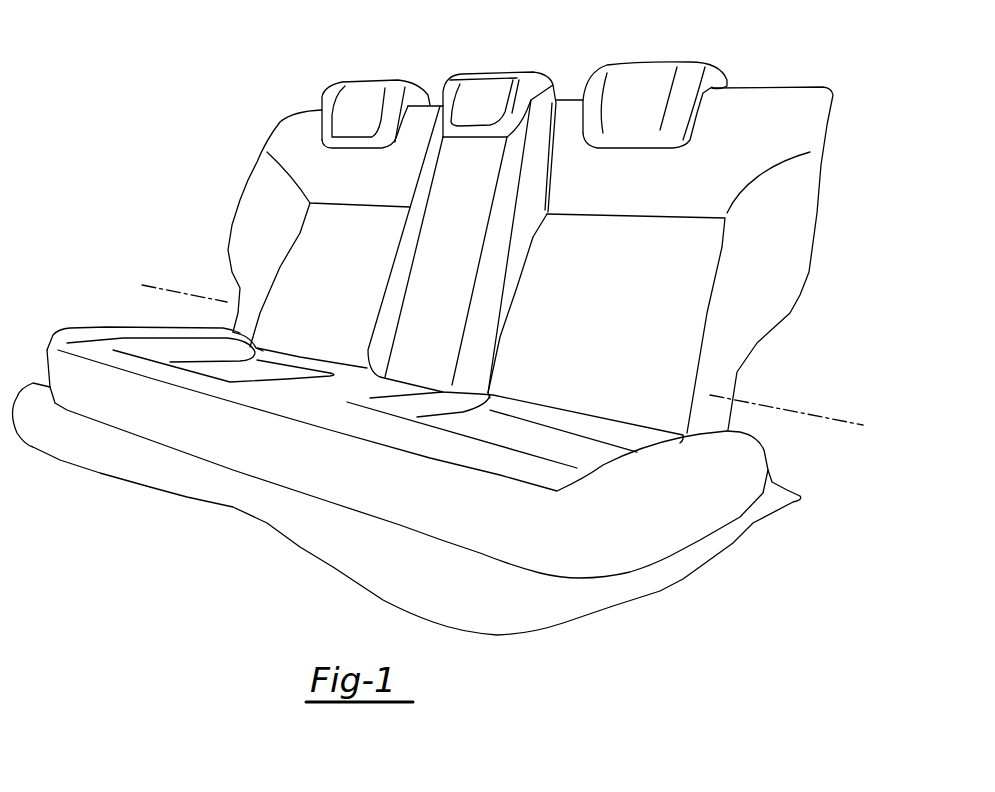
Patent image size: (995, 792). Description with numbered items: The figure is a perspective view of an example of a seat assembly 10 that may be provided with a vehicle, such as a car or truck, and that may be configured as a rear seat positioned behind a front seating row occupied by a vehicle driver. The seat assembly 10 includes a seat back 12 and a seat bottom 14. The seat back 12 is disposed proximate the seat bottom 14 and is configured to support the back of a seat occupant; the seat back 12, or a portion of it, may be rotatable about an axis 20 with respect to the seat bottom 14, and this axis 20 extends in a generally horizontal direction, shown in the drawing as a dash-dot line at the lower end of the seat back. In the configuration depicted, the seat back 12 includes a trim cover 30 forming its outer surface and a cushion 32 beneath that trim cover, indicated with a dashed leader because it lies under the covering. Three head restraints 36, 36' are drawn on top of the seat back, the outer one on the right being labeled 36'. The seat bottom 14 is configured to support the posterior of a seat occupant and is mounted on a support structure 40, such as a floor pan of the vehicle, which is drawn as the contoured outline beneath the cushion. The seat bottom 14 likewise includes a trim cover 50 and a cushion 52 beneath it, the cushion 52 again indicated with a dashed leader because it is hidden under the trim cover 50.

The seat assembly 10 is at (230, 170).
The seat back 12 is at (798, 123).
The seat bottom 14 is at (710, 517).
The axis 20 is at (800, 413).
The trim cover 30 is at (267, 207).
The cushion 32 is at (257, 228).
The head restraint 36 is at (362, 83).
The head restraint 36' is at (655, 75).
The support structure 40 is at (633, 593).
The trim cover 50 is at (193, 348).
The cushion 52 is at (160, 353).